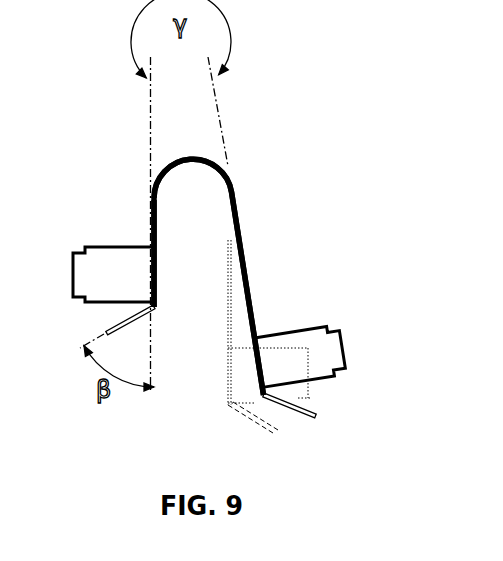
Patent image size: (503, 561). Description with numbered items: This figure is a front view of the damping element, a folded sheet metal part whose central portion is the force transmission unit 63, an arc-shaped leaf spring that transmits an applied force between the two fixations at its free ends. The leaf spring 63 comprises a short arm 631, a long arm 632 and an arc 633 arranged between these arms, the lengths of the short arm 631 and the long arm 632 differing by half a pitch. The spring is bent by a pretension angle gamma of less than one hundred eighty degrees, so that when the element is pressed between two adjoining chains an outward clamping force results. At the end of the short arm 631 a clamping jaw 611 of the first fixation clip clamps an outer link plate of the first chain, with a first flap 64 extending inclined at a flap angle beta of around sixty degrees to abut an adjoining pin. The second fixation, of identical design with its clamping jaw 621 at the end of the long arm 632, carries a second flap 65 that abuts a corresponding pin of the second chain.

The force transmission unit 63 is at (238, 132).
The short arm 631 is at (150, 222).
The long arm 632 is at (247, 273).
The arc 633 is at (191, 155).
The clamping jaw 611 is at (112, 262).
The second plate 621 is at (312, 345).
The first flap 64 is at (118, 318).
The second flap 65 is at (310, 403).